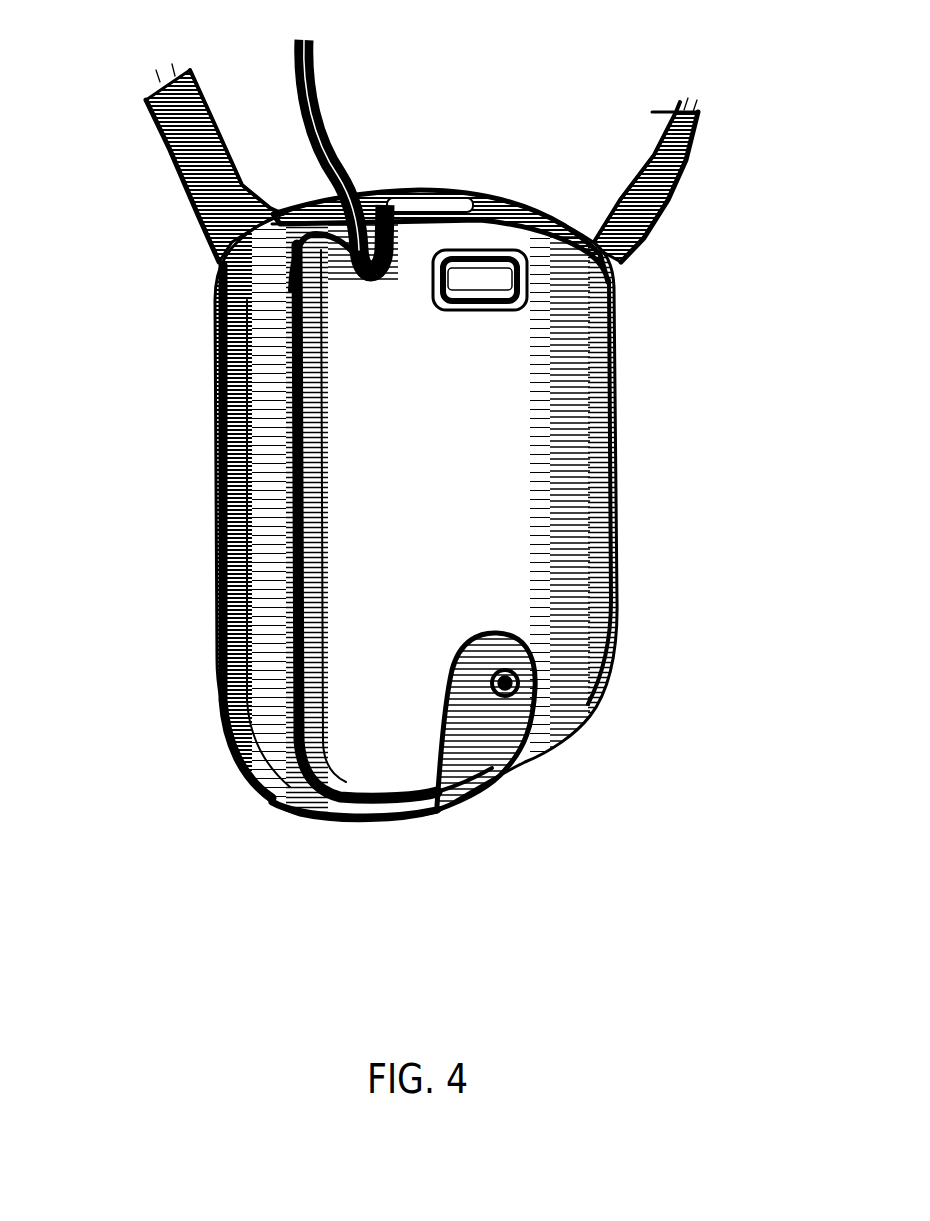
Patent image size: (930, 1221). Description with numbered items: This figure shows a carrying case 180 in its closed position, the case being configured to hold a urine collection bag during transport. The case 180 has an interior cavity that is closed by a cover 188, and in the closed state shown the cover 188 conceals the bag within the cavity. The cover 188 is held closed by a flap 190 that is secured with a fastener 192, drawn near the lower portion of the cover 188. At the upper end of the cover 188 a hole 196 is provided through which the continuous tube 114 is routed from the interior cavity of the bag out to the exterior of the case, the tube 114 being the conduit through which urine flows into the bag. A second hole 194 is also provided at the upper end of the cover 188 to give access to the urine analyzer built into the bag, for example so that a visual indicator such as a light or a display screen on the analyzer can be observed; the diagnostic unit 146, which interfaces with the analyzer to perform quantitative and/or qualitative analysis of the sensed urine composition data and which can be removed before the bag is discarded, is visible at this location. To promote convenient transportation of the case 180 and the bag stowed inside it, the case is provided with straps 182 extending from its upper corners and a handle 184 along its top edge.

The continuous tube 114 is at (317, 100).
The diagnostic unit 146 is at (502, 310).
The carrying case 180 is at (203, 548).
The straps 182 is at (166, 159).
The handle 184 is at (477, 190).
The cover 188 is at (557, 558).
The flap 190 is at (517, 767).
The fastener 192 is at (593, 698).
The hole 194 is at (458, 312).
The hole 196 is at (402, 189).